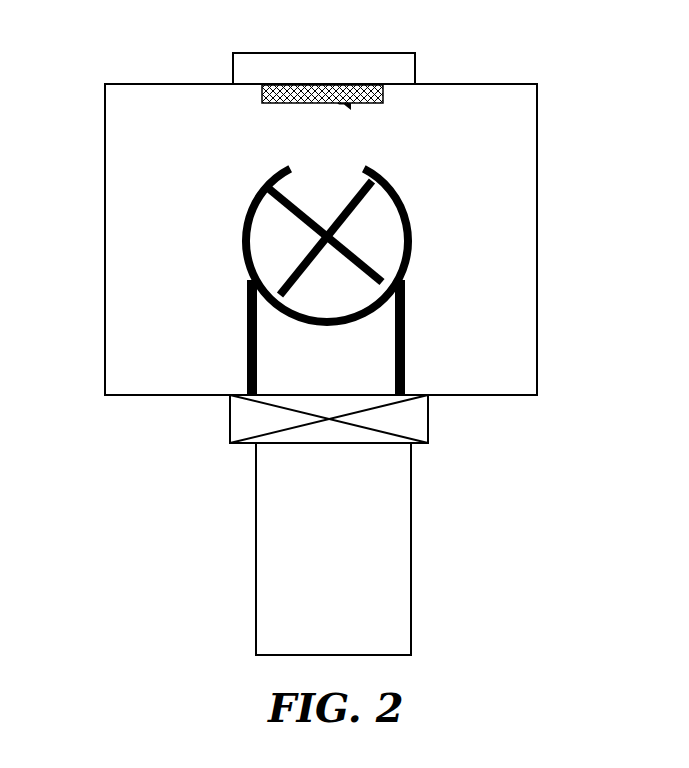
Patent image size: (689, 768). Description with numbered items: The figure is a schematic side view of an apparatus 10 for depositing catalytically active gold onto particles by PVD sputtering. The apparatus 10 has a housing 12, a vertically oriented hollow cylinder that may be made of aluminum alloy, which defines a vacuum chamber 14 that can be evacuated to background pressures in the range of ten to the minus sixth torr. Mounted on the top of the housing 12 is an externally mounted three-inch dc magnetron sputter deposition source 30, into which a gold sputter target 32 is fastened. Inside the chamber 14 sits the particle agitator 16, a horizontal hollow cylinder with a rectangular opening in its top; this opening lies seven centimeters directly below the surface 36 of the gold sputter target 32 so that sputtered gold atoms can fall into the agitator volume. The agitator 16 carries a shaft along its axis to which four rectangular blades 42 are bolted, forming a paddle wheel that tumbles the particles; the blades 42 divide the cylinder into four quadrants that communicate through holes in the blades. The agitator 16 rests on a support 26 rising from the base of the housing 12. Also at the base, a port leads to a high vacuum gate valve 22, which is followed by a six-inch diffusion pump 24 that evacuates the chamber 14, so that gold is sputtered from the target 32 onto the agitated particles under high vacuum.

The apparatus 10 is at (158, 52).
The housing 12 is at (95, 151).
The vacuum chamber 14 is at (140, 292).
The particle agitator 16 is at (412, 185).
The high vacuum gate valve 22 is at (247, 423).
The diffusion pump 24 is at (349, 559).
The support 26 is at (406, 353).
The dc magnetron sputter deposition source 30 is at (338, 63).
The gold sputter target 32 is at (250, 101).
The surface of the gold sputter target 36 is at (359, 115).
The rectangular blades 42 is at (364, 216).